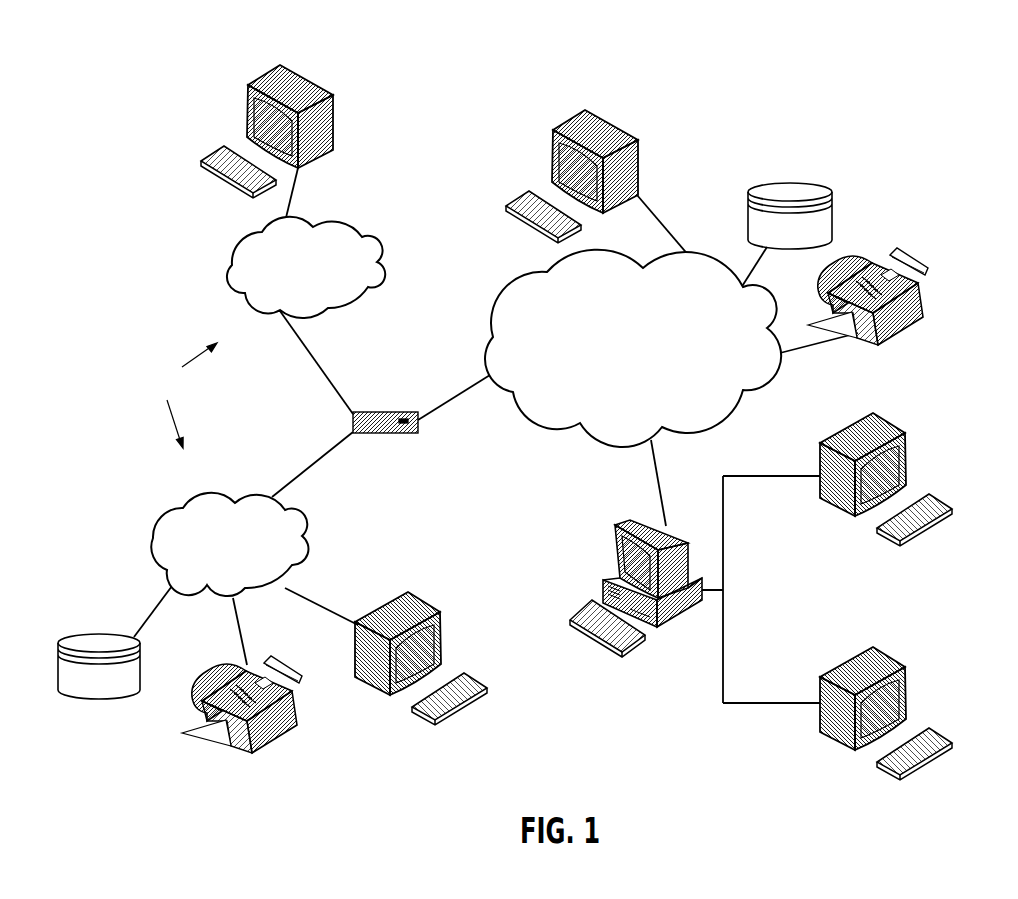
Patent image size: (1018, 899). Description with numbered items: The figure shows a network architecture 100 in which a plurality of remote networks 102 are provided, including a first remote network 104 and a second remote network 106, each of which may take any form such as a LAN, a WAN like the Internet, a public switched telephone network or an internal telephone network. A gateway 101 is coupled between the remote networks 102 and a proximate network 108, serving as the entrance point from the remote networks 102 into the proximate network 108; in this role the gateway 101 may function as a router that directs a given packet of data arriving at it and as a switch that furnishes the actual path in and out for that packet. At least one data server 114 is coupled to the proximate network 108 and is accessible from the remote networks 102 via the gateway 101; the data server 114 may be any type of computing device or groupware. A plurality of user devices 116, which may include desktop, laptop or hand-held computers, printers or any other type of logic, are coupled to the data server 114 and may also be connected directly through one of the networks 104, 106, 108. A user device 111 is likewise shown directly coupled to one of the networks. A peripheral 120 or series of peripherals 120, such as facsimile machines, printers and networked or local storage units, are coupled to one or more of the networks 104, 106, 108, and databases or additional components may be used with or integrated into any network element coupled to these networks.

The architecture 100 is at (562, 39).
The gateway 101 is at (383, 411).
The remote networks 102 is at (182, 395).
The first remote network 104 is at (158, 522).
The second remote network 106 is at (385, 278).
The proximate network 108 is at (743, 404).
The user device 111 is at (641, 175).
The data server 114 is at (615, 548).
The user devices 116 is at (337, 124).
The peripheral 120 is at (790, 182).